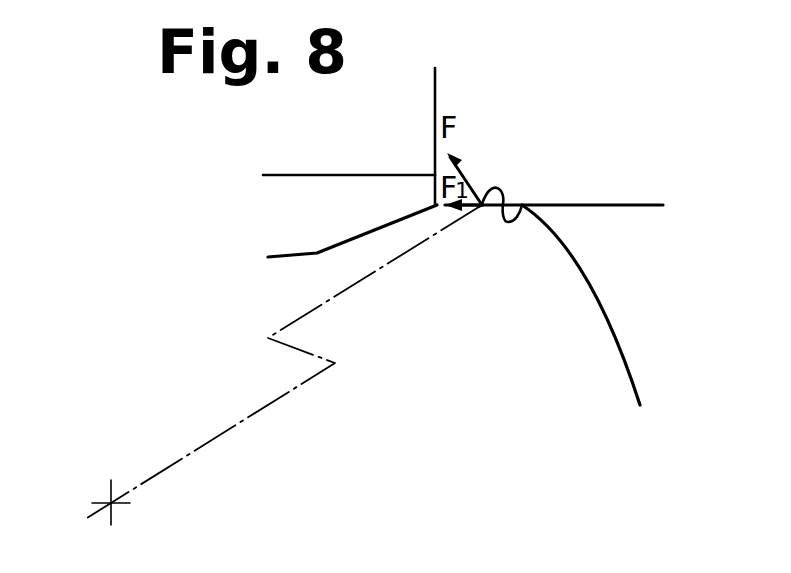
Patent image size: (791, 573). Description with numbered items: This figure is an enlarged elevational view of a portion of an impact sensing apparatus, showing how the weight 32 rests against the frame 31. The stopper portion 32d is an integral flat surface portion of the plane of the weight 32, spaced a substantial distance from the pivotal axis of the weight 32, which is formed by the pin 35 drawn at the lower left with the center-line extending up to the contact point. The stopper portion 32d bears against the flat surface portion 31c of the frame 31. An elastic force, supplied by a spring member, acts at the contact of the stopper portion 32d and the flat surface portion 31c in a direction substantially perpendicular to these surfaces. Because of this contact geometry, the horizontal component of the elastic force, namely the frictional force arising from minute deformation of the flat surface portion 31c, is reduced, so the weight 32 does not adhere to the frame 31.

The frame 31 is at (608, 192).
The flat surface portion 31c is at (522, 205).
The weight 32 is at (382, 238).
The stopper portion 32d is at (482, 205).
The pin 35 is at (107, 497).